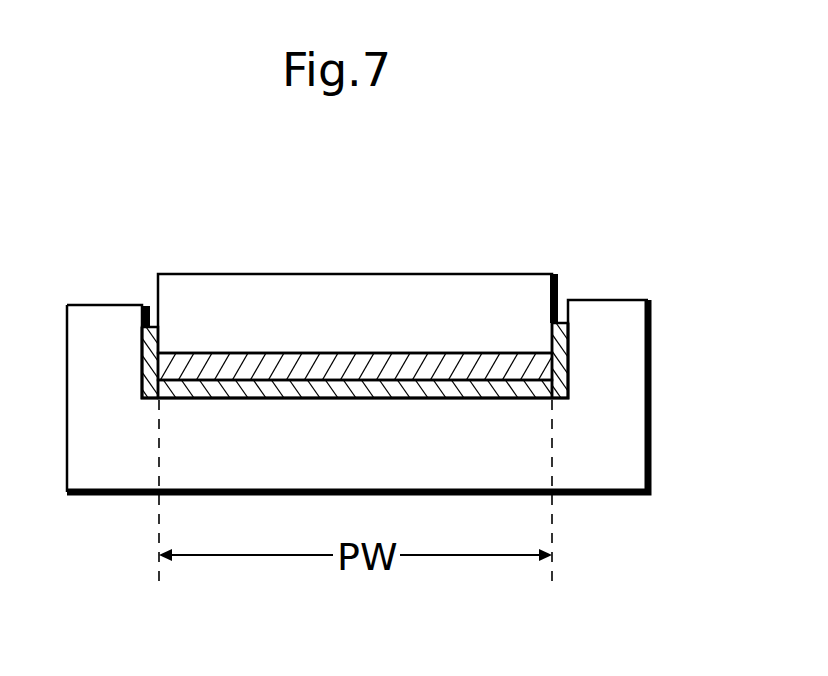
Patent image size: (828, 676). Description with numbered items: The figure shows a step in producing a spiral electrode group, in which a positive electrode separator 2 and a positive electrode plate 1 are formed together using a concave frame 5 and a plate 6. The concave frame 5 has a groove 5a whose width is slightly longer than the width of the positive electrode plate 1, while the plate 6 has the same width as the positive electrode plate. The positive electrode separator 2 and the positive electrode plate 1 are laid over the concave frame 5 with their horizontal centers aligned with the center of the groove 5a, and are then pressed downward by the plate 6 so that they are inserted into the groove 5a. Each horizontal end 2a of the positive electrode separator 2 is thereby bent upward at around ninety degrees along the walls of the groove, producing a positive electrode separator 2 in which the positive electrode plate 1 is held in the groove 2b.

The positive electrode plate 1 is at (460, 366).
The positive electrode separator 2 is at (221, 390).
The horizontal end of the positive electrode separator 2a is at (545, 337).
The groove of the positive electrode separator 2b is at (376, 370).
The concave frame 5 is at (615, 410).
The groove 5a is at (339, 405).
The plate 6 is at (283, 335).